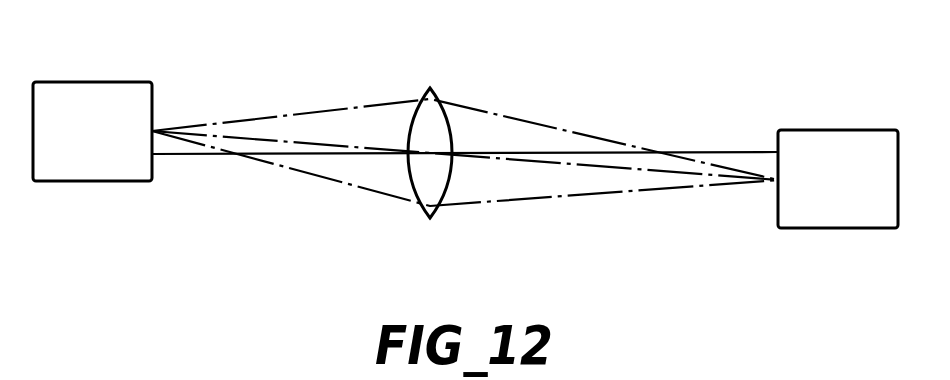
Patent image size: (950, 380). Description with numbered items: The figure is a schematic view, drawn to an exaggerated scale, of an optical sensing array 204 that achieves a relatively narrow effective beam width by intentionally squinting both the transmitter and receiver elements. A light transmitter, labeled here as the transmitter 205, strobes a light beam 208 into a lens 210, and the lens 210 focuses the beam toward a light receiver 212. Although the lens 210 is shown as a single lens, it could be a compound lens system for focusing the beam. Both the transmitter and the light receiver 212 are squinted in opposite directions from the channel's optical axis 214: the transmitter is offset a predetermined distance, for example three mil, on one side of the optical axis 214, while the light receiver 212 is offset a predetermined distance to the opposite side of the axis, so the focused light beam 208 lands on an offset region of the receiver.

The optical sensing array 204 is at (508, 227).
The transmitter 205 is at (130, 181).
The light beam 208 is at (257, 118).
The lens 210 is at (430, 88).
The light receiver 212 is at (803, 228).
The optical axis 214 is at (733, 151).